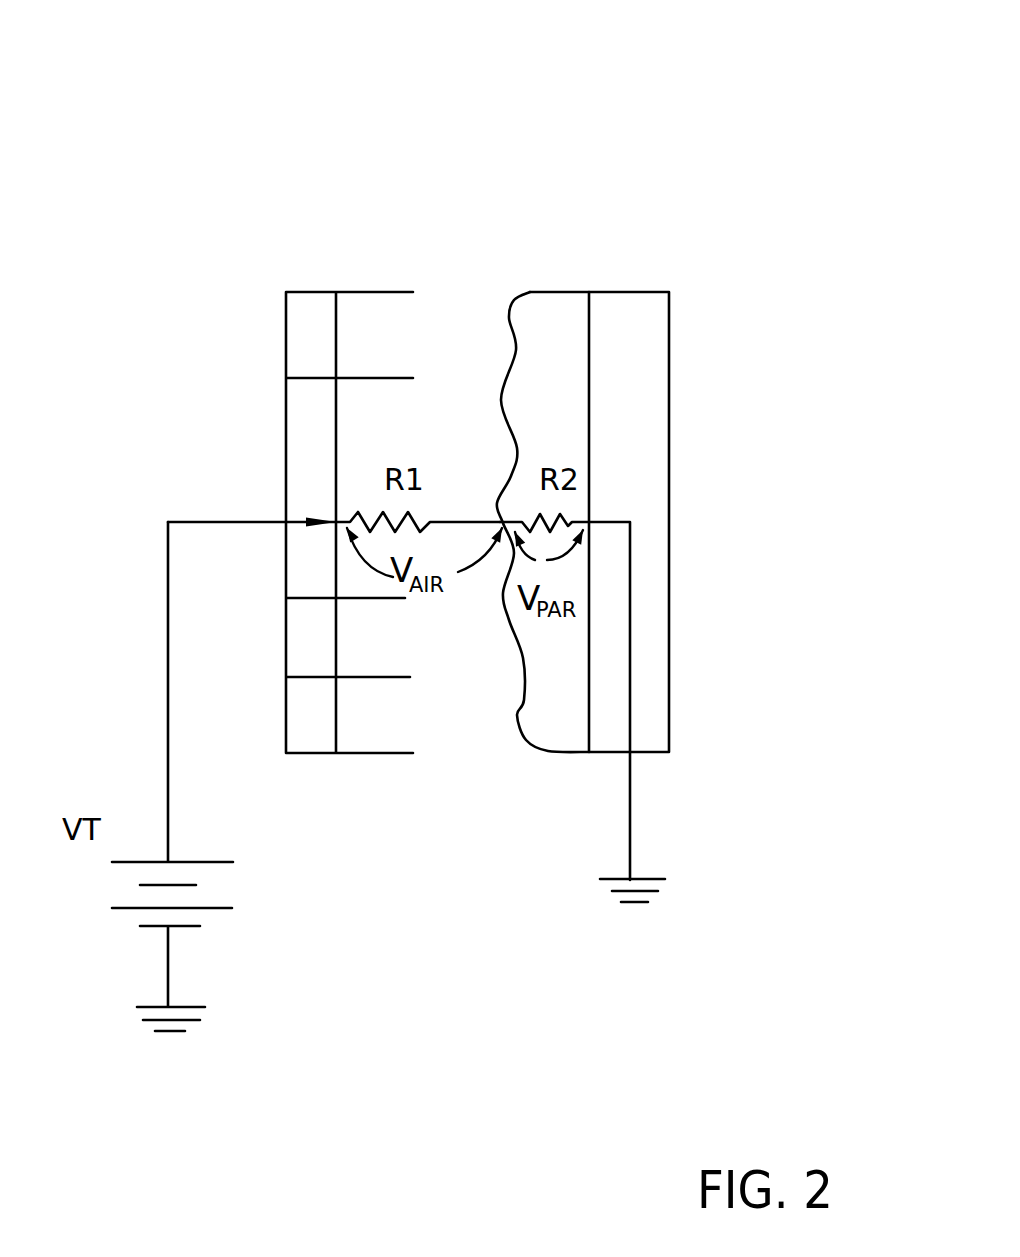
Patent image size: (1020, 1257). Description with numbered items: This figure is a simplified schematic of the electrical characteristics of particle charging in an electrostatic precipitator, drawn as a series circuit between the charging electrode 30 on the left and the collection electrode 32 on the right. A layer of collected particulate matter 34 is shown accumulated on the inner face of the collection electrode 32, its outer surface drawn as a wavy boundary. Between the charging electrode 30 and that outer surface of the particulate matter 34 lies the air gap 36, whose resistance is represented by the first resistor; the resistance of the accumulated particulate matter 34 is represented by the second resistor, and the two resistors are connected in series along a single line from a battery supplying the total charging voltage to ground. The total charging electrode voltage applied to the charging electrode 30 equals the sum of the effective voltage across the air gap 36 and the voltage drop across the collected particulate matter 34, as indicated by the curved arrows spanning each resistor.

The charging electrode 30 is at (302, 340).
The collection electrode 32 is at (622, 347).
The collected particulate matter 34 is at (570, 323).
The air gap 36 is at (460, 395).